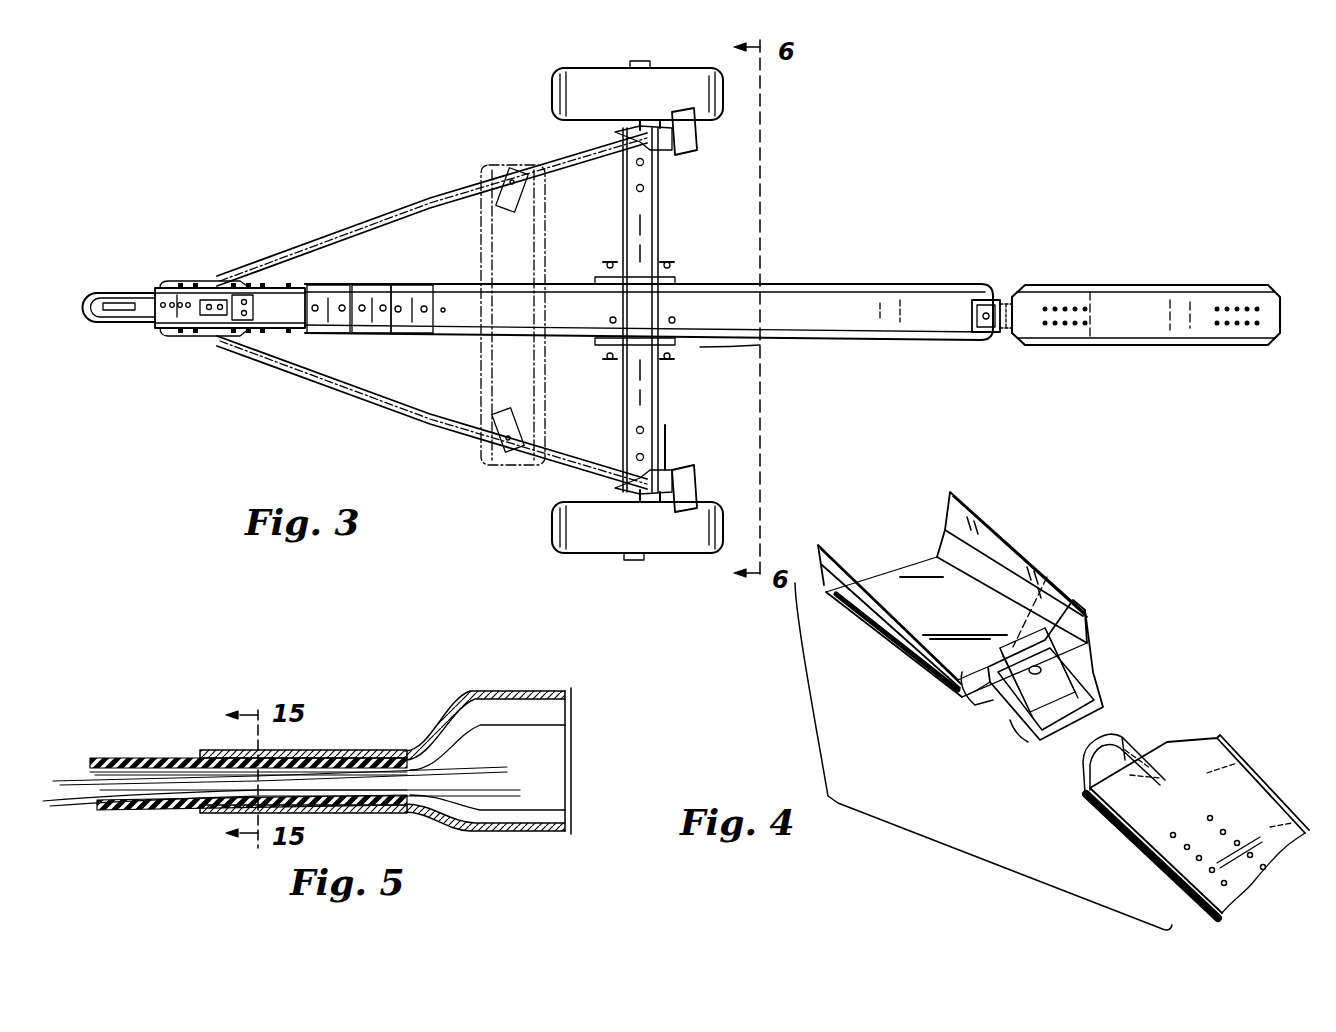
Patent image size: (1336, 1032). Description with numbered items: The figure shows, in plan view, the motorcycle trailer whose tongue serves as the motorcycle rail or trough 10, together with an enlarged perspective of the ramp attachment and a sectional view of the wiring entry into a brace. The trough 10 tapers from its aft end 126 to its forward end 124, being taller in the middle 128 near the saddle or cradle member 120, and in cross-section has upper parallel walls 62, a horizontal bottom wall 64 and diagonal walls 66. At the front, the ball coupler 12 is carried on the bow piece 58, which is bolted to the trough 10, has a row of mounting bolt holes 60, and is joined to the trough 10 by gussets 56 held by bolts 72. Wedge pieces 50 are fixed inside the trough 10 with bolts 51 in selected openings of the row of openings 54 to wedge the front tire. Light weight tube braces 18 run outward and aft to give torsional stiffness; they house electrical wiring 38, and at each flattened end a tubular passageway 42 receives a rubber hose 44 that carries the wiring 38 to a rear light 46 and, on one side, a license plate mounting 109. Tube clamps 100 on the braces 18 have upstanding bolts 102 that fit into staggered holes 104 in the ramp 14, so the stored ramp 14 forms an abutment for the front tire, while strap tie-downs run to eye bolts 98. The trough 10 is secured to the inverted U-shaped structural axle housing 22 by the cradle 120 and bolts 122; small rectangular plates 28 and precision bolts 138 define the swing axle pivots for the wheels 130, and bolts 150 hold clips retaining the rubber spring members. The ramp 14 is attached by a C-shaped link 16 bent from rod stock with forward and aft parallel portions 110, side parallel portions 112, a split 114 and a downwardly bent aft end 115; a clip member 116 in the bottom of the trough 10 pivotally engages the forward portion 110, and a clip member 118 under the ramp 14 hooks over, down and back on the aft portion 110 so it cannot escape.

In FIG. 3, the trough 10 is at (784, 292).
In FIG. 4, the trough 10 is at (949, 575).
In FIG. 3, the ball coupler 12 is at (100, 292).
In FIG. 3, the loading ramp 14 is at (545, 235).
In FIG. 4, the loading ramp 14 is at (1193, 813).
In FIG. 3, the connecting link 16 is at (990, 300).
In FIG. 4, the connecting link 16 is at (1030, 688).
In FIG. 3, the tube braces 18 is at (360, 217).
In FIG. 5, the tube braces 18 is at (543, 732).
In FIG. 3, the structural axle housing 22 is at (655, 212).
In FIG. 3, the small rectangular plate 28 is at (666, 265).
In FIG. 5, the electrical wiring 38 is at (470, 782).
In FIG. 5, the tubular passageway 42 is at (358, 750).
In FIG. 3, the rubber hose 44 is at (670, 148).
In FIG. 5, the rubber hose 44 is at (150, 758).
In FIG. 3, the rear light 46 is at (690, 135).
In FIG. 3, the wedge pieces 50 is at (437, 298).
In FIG. 3, the bolts 51 is at (342, 304).
In FIG. 3, the row of openings 54 is at (383, 304).
In FIG. 3, the gussets 56 is at (243, 309).
In FIG. 3, the bow piece 58 is at (156, 320).
In FIG. 3, the mounting bolt holes 60 is at (178, 300).
In FIG. 4, the upper parallel walls 62 is at (840, 565).
In FIG. 4, the horizontal bottom wall 64 is at (925, 570).
In FIG. 4, the diagonal walls 66 is at (988, 545).
In FIG. 3, the bolts 72 is at (258, 282).
In FIG. 3, the eye bolts/nuts 98 is at (645, 132).
In FIG. 3, the tube clamps 100 is at (495, 178).
In FIG. 3, the upstanding bolts 102 is at (503, 195).
In FIG. 3, the holes 104 is at (1240, 305).
In FIG. 4, the holes 104 is at (1253, 853).
In FIG. 3, the license plate mounting 109 is at (668, 440).
In FIG. 4, the forward and aft parallel portions 110 is at (960, 688).
In FIG. 4, the side parallel portions 112 is at (1060, 648).
In FIG. 4, the split 114 is at (1050, 590).
In FIG. 4, the downwardly bent aft end 115 is at (1010, 735).
In FIG. 4, the clip member 116 is at (1082, 622).
In FIG. 4, the clip member 118 is at (1123, 752).
In FIG. 3, the saddle or cradle member 120 is at (672, 278).
In FIG. 3, the bolts 122 is at (610, 320).
In FIG. 3, the forward end 124 is at (278, 346).
In FIG. 3, the aft end 126 is at (965, 343).
In FIG. 3, the middle 128 is at (756, 342).
In FIG. 3, the wheels 130 is at (632, 80).
In FIG. 3, the precision bolt 138 is at (610, 262).
In FIG. 3, the bolts 150 is at (636, 186).